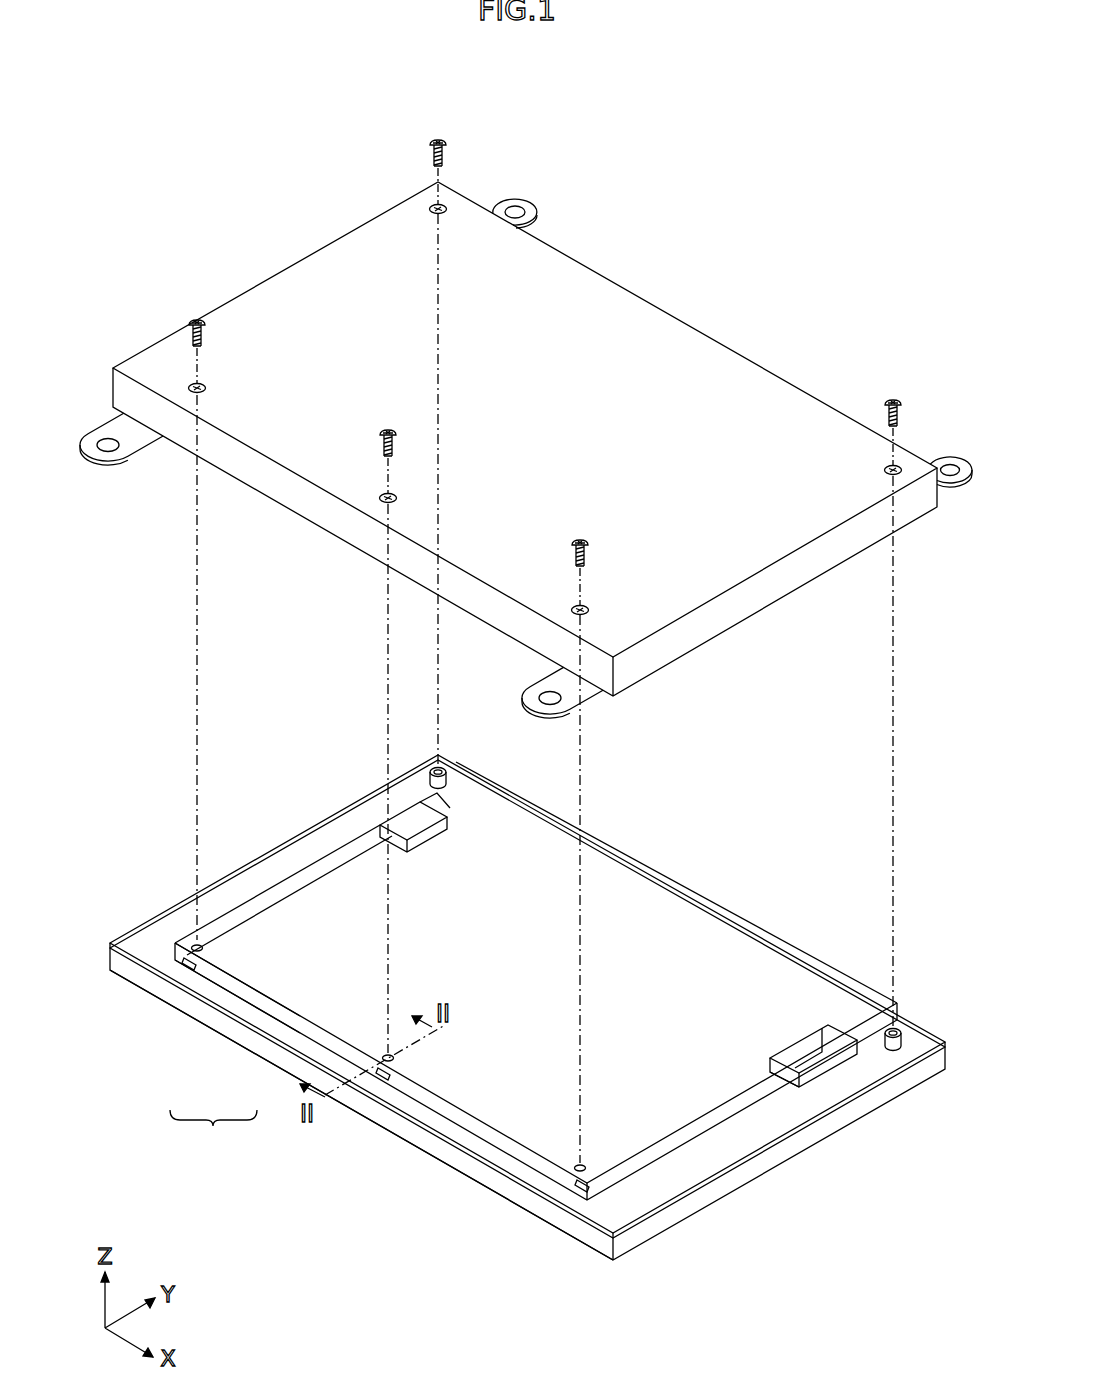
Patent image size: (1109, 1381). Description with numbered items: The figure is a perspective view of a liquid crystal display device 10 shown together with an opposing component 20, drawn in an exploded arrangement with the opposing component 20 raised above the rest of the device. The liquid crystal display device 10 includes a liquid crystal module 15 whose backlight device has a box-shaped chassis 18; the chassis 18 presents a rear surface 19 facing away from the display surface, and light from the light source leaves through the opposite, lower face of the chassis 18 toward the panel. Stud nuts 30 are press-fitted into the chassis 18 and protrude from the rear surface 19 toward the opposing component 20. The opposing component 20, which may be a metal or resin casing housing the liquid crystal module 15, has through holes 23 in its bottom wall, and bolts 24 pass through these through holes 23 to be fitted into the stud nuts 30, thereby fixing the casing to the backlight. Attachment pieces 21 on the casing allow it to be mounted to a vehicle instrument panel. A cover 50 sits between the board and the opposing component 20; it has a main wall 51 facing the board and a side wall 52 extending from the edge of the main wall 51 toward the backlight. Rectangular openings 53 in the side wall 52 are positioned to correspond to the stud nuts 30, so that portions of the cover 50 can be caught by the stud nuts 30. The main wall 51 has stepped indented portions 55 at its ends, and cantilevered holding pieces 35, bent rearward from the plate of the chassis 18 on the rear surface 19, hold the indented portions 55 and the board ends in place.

The liquid crystal display device 10 is at (903, 1175).
The liquid crystal module 15 is at (700, 1197).
The chassis 18 is at (277, 865).
The rear surface 19 is at (722, 1150).
The opposing component 20 is at (772, 392).
The attachment piece 21 is at (130, 437).
The through hole 23 is at (392, 495).
The bolt 24 is at (400, 441).
The stud nut 30 is at (902, 1032).
The holding piece 35 is at (420, 808).
The cover 50 is at (213, 1138).
The main wall 51 is at (253, 957).
The side wall 52 is at (262, 1000).
The opening 53 is at (383, 1075).
The indented portion 55 is at (792, 1068).